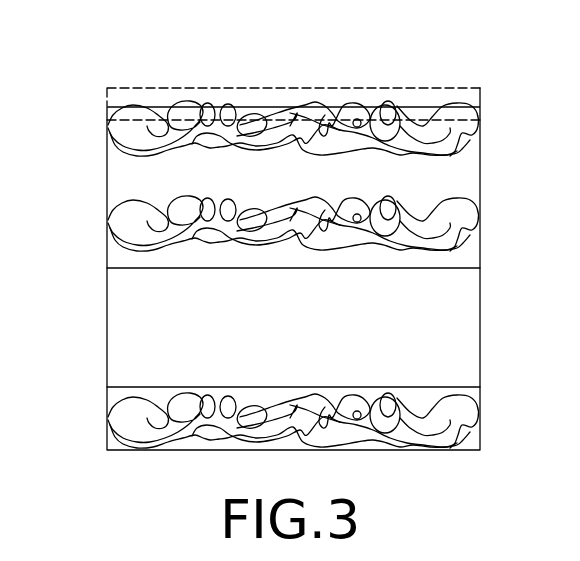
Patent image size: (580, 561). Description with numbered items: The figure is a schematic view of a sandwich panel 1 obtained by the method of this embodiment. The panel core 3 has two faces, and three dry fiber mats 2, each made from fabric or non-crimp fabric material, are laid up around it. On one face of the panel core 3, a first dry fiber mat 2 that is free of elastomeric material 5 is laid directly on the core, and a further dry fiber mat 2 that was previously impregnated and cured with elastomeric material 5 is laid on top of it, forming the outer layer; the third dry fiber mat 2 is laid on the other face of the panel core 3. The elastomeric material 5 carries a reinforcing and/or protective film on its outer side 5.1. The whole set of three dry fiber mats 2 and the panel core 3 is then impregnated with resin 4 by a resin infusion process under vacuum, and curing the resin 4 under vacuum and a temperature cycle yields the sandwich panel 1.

The sandwich panel 1 is at (137, 68).
The dry fiber mat 2 is at (470, 100).
The panel core 3 is at (472, 343).
The resin 4 is at (107, 190).
The elastomeric material 5 is at (482, 110).
The outer side of the elastomeric material 5.1 is at (337, 88).